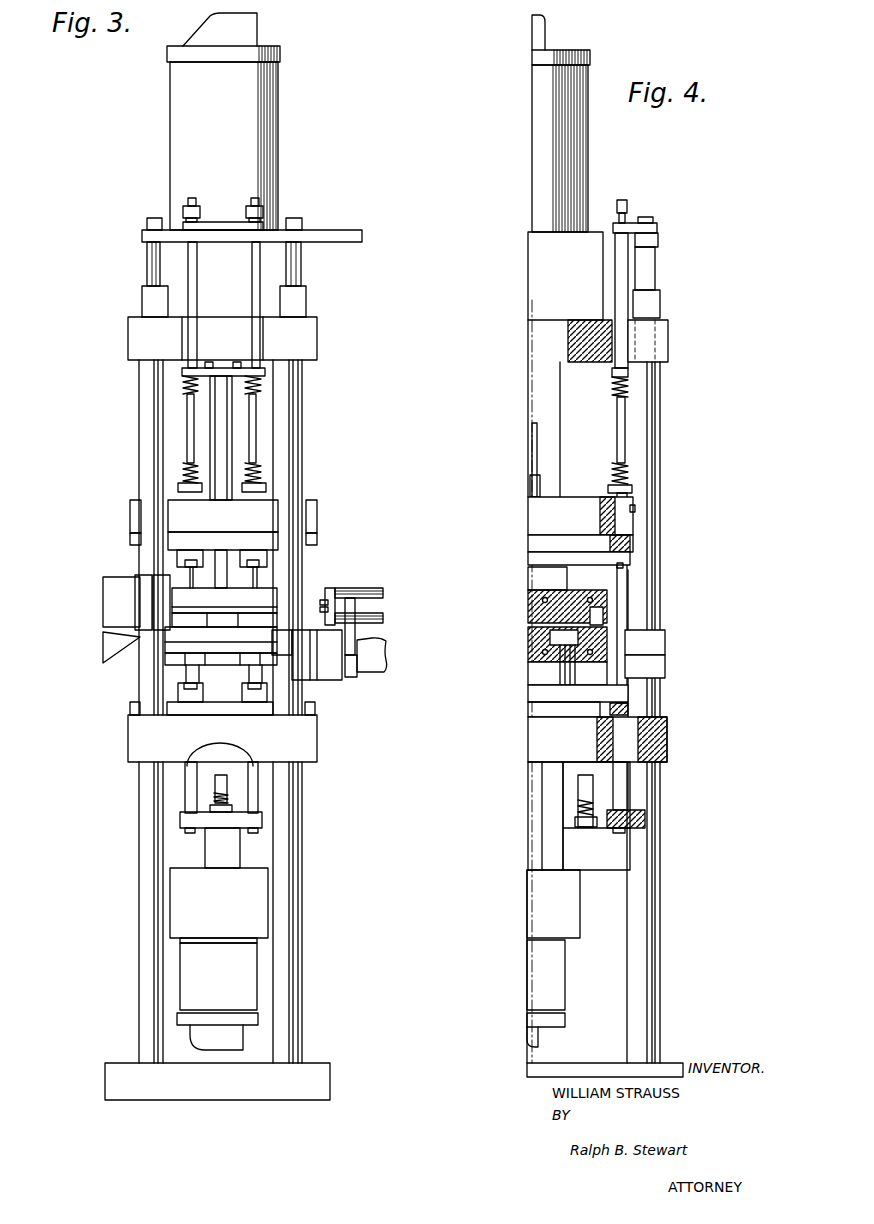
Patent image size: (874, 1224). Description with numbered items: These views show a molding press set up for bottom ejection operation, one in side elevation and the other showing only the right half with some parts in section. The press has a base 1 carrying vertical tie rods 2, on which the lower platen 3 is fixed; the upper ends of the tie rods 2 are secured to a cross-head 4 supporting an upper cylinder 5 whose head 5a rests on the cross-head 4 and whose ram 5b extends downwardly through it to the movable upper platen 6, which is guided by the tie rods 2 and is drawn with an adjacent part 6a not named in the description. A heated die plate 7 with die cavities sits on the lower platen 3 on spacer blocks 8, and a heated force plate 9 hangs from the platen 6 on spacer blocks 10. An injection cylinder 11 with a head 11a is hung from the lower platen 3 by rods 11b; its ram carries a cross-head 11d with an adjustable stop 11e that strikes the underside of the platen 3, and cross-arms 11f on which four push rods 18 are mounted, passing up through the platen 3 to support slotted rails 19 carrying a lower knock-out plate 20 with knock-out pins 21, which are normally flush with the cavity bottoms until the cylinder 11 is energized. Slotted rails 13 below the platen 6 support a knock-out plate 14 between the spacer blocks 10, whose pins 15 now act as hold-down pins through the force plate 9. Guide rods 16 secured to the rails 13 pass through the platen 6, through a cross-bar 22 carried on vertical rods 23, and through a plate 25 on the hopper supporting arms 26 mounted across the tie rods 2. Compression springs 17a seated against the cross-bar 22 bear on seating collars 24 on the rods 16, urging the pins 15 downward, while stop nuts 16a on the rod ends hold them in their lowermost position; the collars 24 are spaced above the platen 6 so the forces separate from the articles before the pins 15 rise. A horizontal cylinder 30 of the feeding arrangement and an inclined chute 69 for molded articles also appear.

In FIG. 3, the base 1 is at (317, 1070).
In FIG. 4, the base 1 is at (530, 1068).
In FIG. 3, the tie rods 2 is at (145, 900).
In FIG. 4, the tie rods 2 is at (650, 972).
In FIG. 3, the lower platen 3 is at (128, 730).
In FIG. 4, the lower platen 3 is at (667, 740).
In FIG. 3, the cross-head 4 is at (128, 335).
In FIG. 4, the cross-head 4 is at (668, 330).
In FIG. 3, the upper cylinder 5 is at (270, 134).
In FIG. 4, the upper cylinder 5 is at (585, 165).
In FIG. 3, the head 5a is at (273, 273).
In FIG. 4, the head 5a is at (597, 230).
In FIG. 4, the piston rod or ram 5b is at (555, 370).
In FIG. 3, the upper platen 6 is at (130, 517).
In FIG. 4, the upper platen 6 is at (600, 503).
In FIG. 4, the guide bar 6a is at (538, 430).
In FIG. 4, the die plate 7 is at (665, 640).
In FIG. 4, the spacer blocks 8 is at (665, 667).
In FIG. 4, the force plate 9 is at (605, 605).
In FIG. 4, the spacer blocks 10 is at (625, 577).
In FIG. 3, the injection cylinder 11 is at (248, 993).
In FIG. 4, the injection cylinder 11 is at (560, 990).
In FIG. 3, the head 11a is at (258, 898).
In FIG. 4, the head 11a is at (578, 917).
In FIG. 4, the rods 11b is at (562, 848).
In FIG. 3, the cross-head 11d is at (240, 852).
In FIG. 4, the cross-head 11d is at (625, 855).
In FIG. 3, the adjustable stop 11e is at (227, 783).
In FIG. 4, the adjustable stop 11e is at (584, 775).
In FIG. 3, the cross-arms 11f is at (183, 828).
In FIG. 4, the cross-arms 11f is at (645, 822).
In FIG. 3, the slotted rails 13 is at (175, 540).
In FIG. 4, the slotted rails 13 is at (625, 545).
In FIG. 3, the knock-out plate 14 is at (190, 560).
In FIG. 4, the knock-out plate 14 is at (625, 558).
In FIG. 3, the hold-down pins 15 is at (253, 580).
In FIG. 4, the hold-down pins 15 is at (560, 577).
In FIG. 3, the guide rods 16 is at (250, 263).
In FIG. 4, the guide rods 16 is at (625, 428).
In FIG. 3, the stop nuts 16a is at (262, 210).
In FIG. 4, the stop nuts 16a is at (632, 207).
In FIG. 3, the compression springs 17a is at (183, 466).
In FIG. 4, the compression springs 17a is at (630, 468).
In FIG. 3, the push rods 18 is at (220, 752).
In FIG. 4, the push rods 18 is at (628, 788).
In FIG. 3, the slotted rails 19 is at (172, 707).
In FIG. 4, the slotted rails 19 is at (630, 710).
In FIG. 4, the lower knock-out plate 20 is at (625, 695).
In FIG. 4, the knock-out pins 21 is at (570, 675).
In FIG. 3, the cross-bar 22 is at (182, 372).
In FIG. 4, the cross-bar 22 is at (628, 372).
In FIG. 3, the vertical rods 23 is at (232, 388).
In FIG. 3, the seating collars 24 is at (178, 488).
In FIG. 4, the seating collars 24 is at (632, 489).
In FIG. 3, the plate 25 is at (224, 227).
In FIG. 4, the plate 25 is at (658, 227).
In FIG. 3, the hopper supporting arms 26 is at (315, 236).
In FIG. 4, the hopper supporting arms 26 is at (658, 240).
In FIG. 3, the horizontal cylinder 30 is at (368, 665).
In FIG. 3, the inclined chute 69 is at (103, 637).